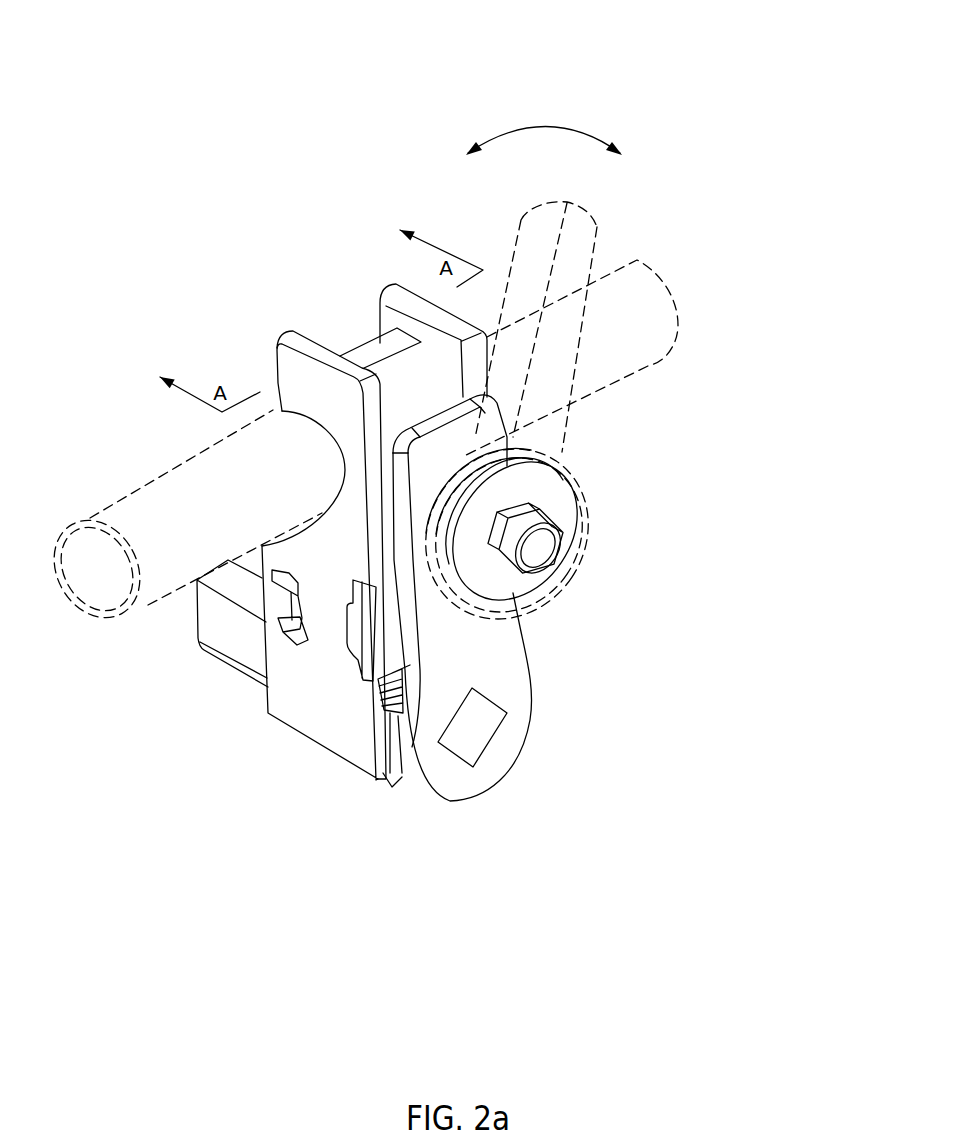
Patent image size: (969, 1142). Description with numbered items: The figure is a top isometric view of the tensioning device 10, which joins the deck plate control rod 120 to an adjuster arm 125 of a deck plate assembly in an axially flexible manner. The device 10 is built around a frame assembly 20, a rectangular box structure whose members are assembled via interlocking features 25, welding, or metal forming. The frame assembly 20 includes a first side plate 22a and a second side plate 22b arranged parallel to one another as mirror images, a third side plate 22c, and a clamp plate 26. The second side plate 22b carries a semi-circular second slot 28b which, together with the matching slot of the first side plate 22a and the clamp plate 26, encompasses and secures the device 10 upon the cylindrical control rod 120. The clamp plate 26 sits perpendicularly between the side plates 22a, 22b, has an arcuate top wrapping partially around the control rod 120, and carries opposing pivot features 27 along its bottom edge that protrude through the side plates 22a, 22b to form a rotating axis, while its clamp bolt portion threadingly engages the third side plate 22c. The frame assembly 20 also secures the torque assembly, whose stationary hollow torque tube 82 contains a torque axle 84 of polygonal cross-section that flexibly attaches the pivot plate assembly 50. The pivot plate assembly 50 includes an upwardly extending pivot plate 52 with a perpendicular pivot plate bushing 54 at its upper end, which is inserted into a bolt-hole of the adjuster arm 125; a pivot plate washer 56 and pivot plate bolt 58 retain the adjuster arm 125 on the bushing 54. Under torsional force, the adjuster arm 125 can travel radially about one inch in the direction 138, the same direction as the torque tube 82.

The tensioning device 10 is at (712, 535).
The frame assembly 20 is at (300, 722).
The first side plate 22a is at (392, 308).
The second side plate 22b is at (295, 377).
The third side plate 22c is at (423, 372).
The interlocking features 25 is at (360, 691).
The clamp plate 26 is at (373, 349).
The pivot features 27 is at (288, 600).
The second slot 28b is at (345, 462).
The pivot plate assembly 50 is at (497, 641).
The pivot plate 52 is at (380, 684).
The pivot plate bushing 54 is at (477, 468).
The pivot plate washer 56 is at (577, 493).
The pivot plate bolt 58 is at (562, 557).
The torque tube 82 is at (247, 633).
The torque axle 84 is at (503, 718).
The deck plate control rod 120 is at (150, 605).
The adjuster arm 125 is at (585, 295).
The direction 138 is at (548, 127).